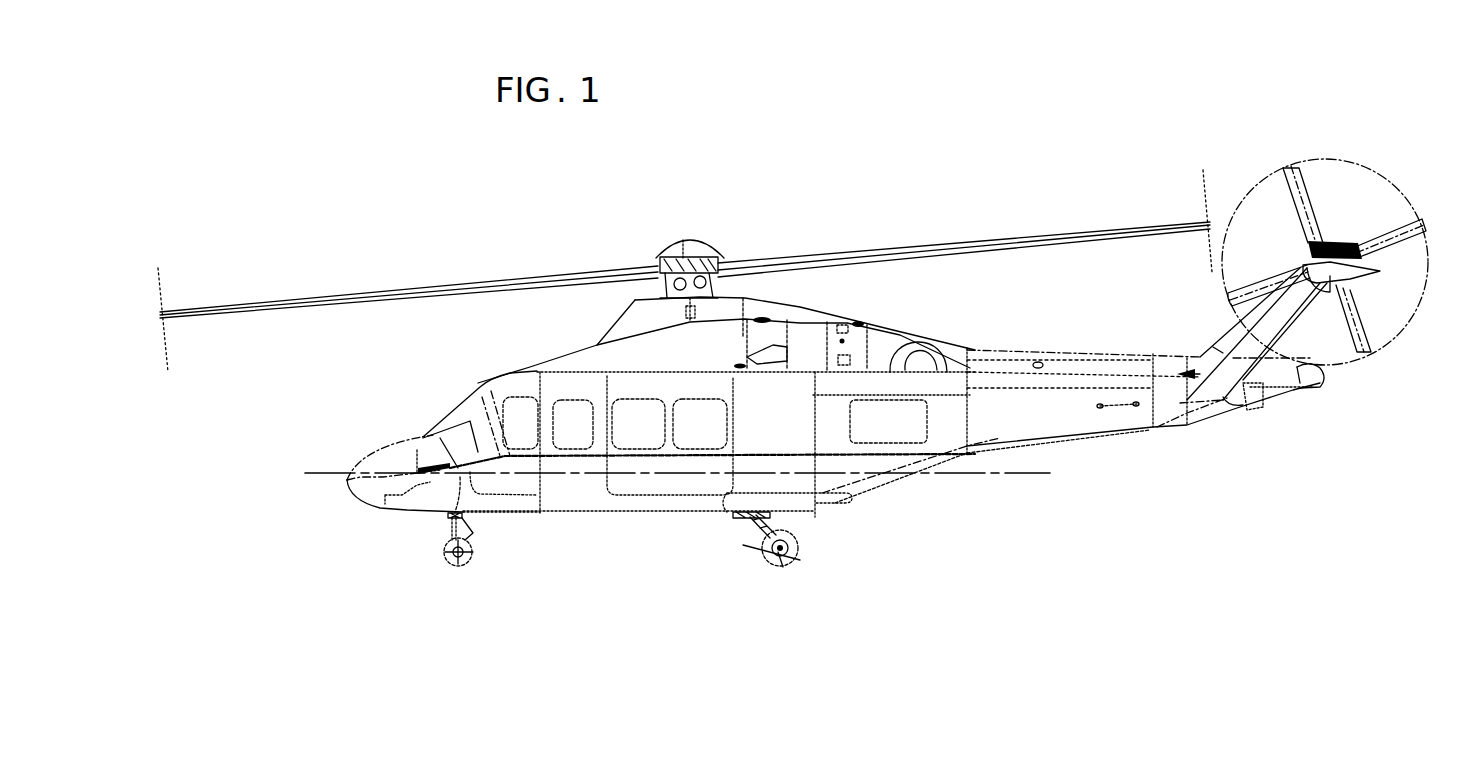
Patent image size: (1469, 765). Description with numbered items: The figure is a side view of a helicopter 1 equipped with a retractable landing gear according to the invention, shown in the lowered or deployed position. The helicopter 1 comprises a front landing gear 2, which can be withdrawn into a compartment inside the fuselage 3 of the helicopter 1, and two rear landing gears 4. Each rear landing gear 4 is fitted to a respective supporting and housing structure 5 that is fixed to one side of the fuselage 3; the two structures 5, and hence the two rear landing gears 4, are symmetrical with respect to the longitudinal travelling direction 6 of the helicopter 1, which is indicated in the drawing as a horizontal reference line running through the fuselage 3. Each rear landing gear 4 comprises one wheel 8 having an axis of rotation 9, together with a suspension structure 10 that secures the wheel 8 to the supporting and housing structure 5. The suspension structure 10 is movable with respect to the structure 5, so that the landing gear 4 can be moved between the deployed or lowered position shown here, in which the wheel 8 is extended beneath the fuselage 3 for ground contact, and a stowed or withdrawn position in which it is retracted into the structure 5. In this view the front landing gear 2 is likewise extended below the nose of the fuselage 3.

The helicopter 1 is at (958, 181).
The front landing gear 2 is at (472, 552).
The fuselage 3 is at (568, 503).
The rear landing gear 4 is at (805, 533).
The supporting and housing structure 5 is at (800, 502).
The longitudinal travelling direction 6 is at (990, 474).
The wheel 8 is at (772, 563).
The axis of rotation 9 is at (788, 571).
The suspension structure 10 is at (747, 513).